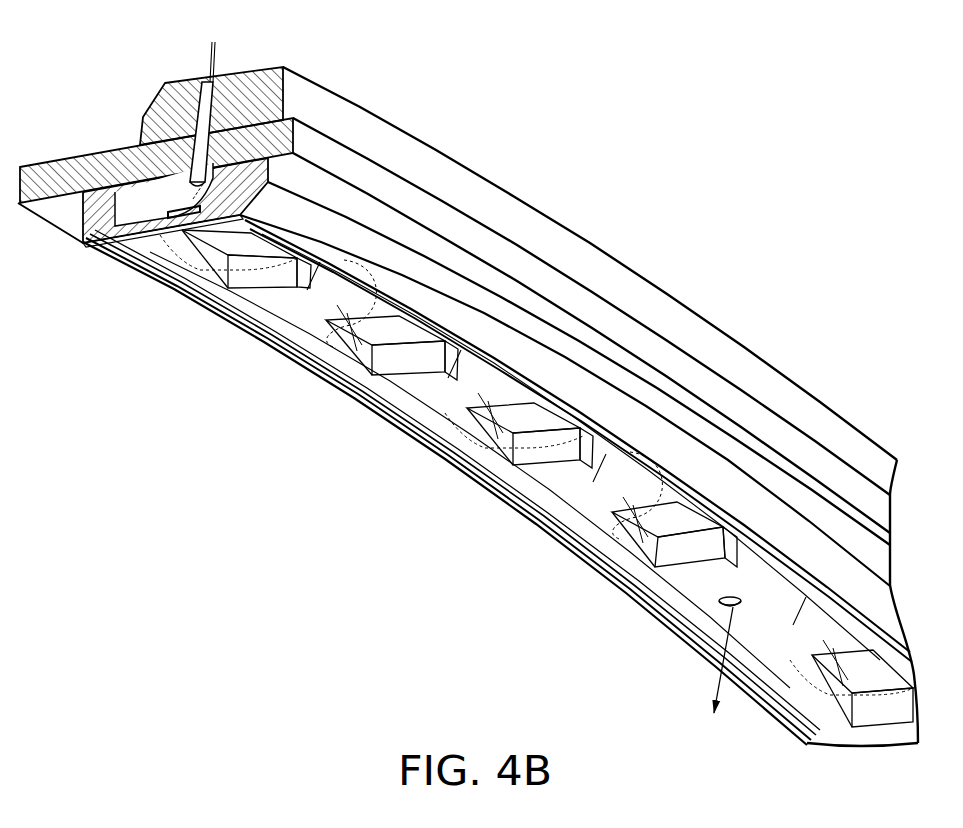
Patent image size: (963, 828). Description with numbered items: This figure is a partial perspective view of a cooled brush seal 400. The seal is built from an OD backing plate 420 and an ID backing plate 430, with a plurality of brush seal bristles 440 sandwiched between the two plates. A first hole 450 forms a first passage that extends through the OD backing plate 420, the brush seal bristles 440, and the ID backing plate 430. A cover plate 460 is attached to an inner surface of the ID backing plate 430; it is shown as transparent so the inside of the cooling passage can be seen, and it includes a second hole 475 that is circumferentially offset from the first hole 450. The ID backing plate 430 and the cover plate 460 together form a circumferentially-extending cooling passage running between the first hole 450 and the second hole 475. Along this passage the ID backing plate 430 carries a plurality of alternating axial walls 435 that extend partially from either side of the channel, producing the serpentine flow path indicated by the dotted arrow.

The cooled brush seal 400 is at (567, 55).
The OD backing plate 420 is at (306, 101).
The ID backing plate 430 is at (441, 259).
The alternating axial walls 435 is at (260, 290).
The brush seal bristles 440 is at (377, 177).
The first hole 450 is at (205, 82).
The cover plate 460 is at (143, 220).
The second hole 475 is at (727, 606).